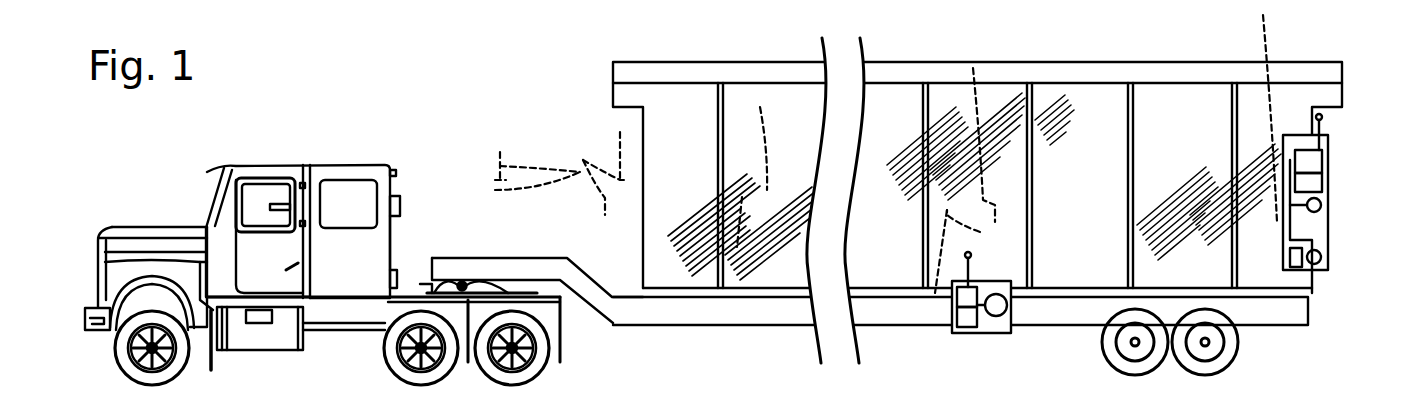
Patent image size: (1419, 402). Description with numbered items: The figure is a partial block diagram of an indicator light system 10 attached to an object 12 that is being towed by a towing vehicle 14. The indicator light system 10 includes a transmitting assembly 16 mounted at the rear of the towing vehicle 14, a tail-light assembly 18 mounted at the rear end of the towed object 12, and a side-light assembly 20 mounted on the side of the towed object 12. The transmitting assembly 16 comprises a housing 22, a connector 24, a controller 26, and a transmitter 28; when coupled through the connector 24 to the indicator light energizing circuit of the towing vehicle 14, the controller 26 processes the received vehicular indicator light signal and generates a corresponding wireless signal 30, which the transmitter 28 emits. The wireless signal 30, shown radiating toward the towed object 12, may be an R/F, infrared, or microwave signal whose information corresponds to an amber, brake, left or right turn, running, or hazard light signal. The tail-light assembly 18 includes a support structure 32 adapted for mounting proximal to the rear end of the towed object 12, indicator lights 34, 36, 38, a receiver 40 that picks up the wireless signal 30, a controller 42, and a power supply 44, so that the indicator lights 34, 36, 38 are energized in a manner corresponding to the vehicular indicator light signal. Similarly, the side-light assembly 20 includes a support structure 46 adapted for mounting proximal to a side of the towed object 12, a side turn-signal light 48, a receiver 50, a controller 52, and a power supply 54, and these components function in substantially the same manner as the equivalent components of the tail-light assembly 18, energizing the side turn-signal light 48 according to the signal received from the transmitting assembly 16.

The indicator light system 10 is at (1378, 35).
The object 12 is at (638, 62).
The towing vehicle 14 is at (250, 165).
The transmitting assembly 16 is at (434, 104).
The tail-light assembly 18 is at (1385, 128).
The side-light assembly 20 is at (958, 350).
The housing 22 is at (404, 215).
The connector 24 is at (398, 270).
The controller 26 is at (403, 205).
The transmitter 28 is at (398, 172).
The wireless signal 30 is at (886, 154).
The support structure 32 is at (1330, 240).
The indicator light 34 is at (1296, 270).
The indicator light 36 is at (1322, 258).
The indicator light 38 is at (1322, 205).
The receiver 40 is at (1325, 128).
The controller 42 is at (1324, 160).
The power supply 44 is at (1324, 185).
The support structure 46 is at (990, 333).
The side turn-signal light 48 is at (1008, 305).
The receiver 50 is at (972, 270).
The controller 52 is at (956, 300).
The power supply 54 is at (956, 322).